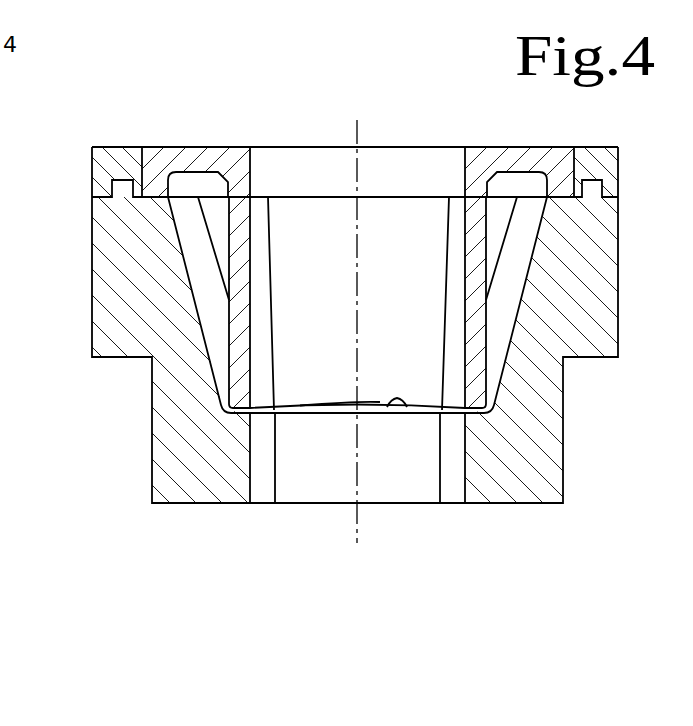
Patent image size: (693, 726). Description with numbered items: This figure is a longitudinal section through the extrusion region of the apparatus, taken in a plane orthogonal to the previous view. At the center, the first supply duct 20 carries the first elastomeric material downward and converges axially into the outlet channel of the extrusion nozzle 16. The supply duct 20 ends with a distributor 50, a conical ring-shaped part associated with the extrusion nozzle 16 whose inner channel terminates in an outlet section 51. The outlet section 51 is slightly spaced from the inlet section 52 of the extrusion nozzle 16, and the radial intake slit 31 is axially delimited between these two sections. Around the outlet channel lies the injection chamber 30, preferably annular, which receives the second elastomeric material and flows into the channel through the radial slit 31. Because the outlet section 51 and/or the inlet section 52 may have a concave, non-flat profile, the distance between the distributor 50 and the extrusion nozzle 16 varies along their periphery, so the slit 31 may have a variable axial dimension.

The extrusion nozzle 16 is at (530, 453).
The first supply duct 20 is at (405, 247).
The injection chamber 30 is at (208, 183).
The radial intake slit 31 is at (325, 412).
The distributor 50 is at (242, 252).
The outlet section 51 is at (343, 405).
The inlet section 52 is at (407, 407).